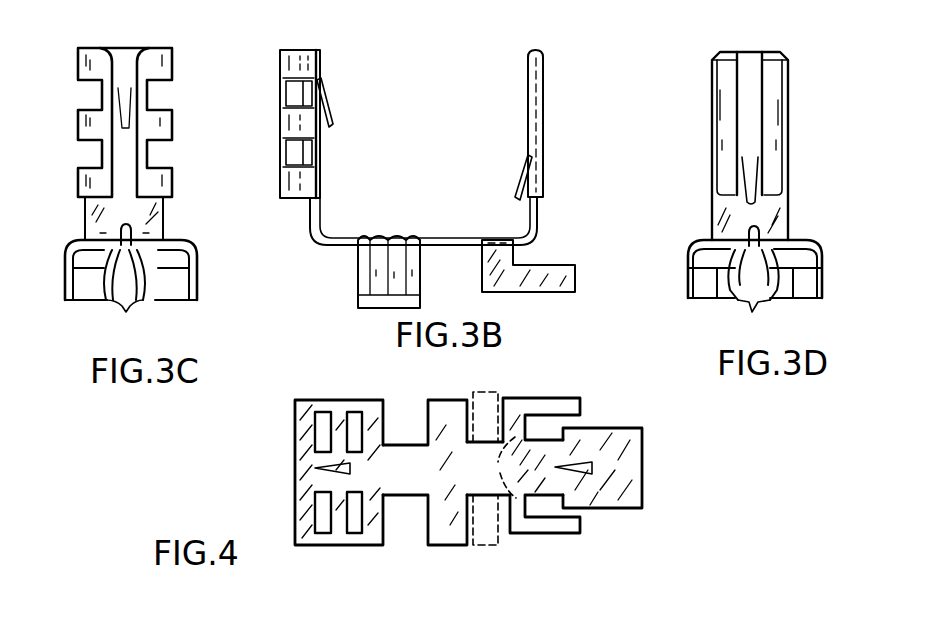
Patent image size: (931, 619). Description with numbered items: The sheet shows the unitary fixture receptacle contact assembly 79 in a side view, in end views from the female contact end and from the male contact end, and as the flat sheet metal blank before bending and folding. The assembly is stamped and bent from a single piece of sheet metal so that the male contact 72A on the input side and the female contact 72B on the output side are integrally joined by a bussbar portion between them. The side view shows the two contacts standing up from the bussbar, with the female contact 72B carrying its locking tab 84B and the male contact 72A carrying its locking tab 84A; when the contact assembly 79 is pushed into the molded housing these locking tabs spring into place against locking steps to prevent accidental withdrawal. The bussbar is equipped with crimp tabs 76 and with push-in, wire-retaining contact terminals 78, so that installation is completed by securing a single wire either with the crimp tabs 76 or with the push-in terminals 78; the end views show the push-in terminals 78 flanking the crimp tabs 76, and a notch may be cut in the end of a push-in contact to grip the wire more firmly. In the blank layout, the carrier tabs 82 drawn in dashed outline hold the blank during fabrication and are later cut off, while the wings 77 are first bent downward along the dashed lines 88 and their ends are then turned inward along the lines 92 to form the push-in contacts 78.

In FIG. 3B, the male contact 72A is at (528, 108).
In FIG. 3D, the male contact 72A is at (783, 117).
In FIG. 4, the male contact 72A is at (645, 442).
In FIG. 3C, the female contact 72B is at (172, 64).
In FIG. 3B, the female contact 72B is at (318, 138).
In FIG. 4, the female contact 72B is at (338, 412).
In FIG. 3C, the crimp tabs 76 is at (124, 281).
In FIG. 3B, the crimp tabs 76 is at (357, 272).
In FIG. 3D, the crimp tabs 76 is at (753, 284).
In FIG. 4, the crimp tabs 76 is at (430, 405).
In FIG. 4, the wings 77 is at (543, 390).
In FIG. 3C, the push-in, wire-retaining contact terminals 78 is at (85, 304).
In FIG. 3B, the push-in, wire-retaining contact terminals 78 is at (540, 268).
In FIG. 3D, the push-in, wire-retaining contact terminals 78 is at (706, 297).
In FIG. 3B, the contact assembly 79 is at (434, 98).
In FIG. 4, the carrier tabs 82 is at (485, 395).
In FIG. 3B, the locking tab 84A is at (518, 182).
In FIG. 3D, the locking tab 84A is at (748, 167).
In FIG. 4, the locking tab 84A is at (566, 465).
In FIG. 3B, the locking tab 84B is at (331, 104).
In FIG. 4, the locking tab 84B is at (320, 468).
In FIG. 4, the dashed lines 88 is at (509, 456).
In FIG. 4, the lines 92 is at (555, 403).